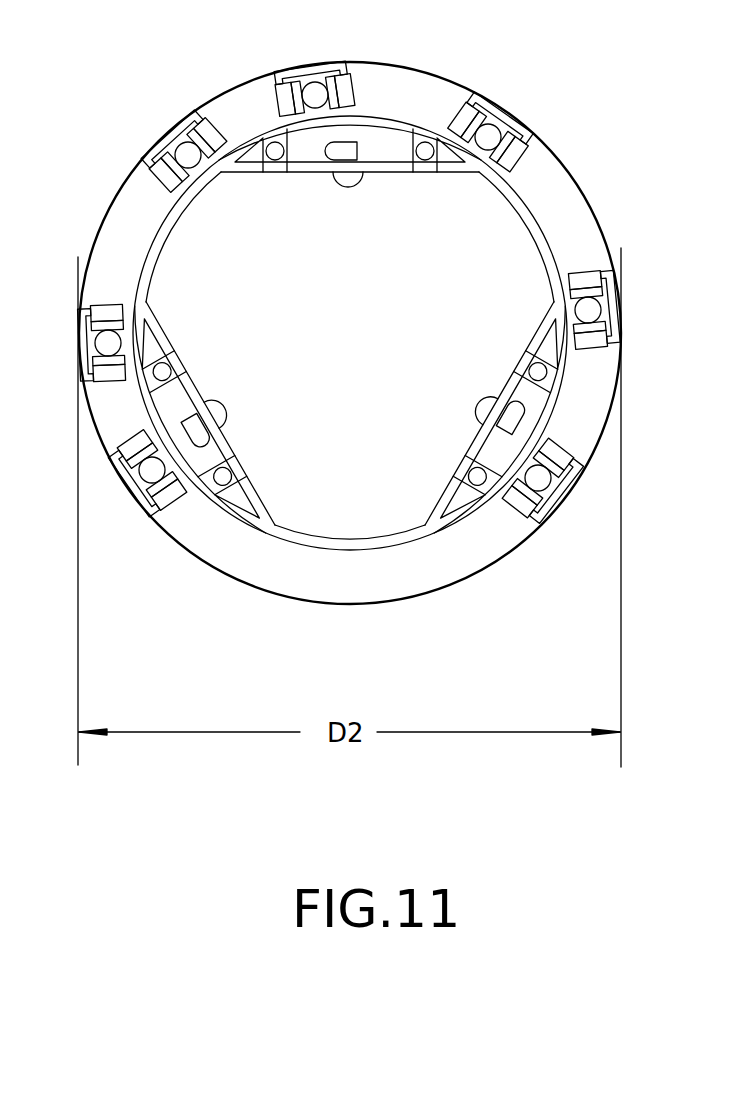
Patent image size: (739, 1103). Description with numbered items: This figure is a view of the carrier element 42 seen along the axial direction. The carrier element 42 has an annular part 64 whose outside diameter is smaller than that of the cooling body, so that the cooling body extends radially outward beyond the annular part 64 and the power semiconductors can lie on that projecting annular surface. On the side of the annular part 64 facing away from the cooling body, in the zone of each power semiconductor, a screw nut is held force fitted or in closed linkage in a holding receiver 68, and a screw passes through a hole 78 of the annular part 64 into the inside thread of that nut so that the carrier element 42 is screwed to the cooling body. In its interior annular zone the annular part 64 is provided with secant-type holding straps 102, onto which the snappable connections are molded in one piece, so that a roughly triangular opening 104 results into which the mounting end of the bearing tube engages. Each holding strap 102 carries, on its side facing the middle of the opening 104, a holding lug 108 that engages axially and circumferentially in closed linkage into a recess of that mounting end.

The carrier element 42 is at (116, 164).
The annular part 64 is at (430, 92).
The holding receiver 68 is at (313, 88).
The hole 78 is at (489, 127).
The holding strap 102 is at (303, 167).
The opening 104 is at (422, 315).
The holding lug 108 is at (353, 176).